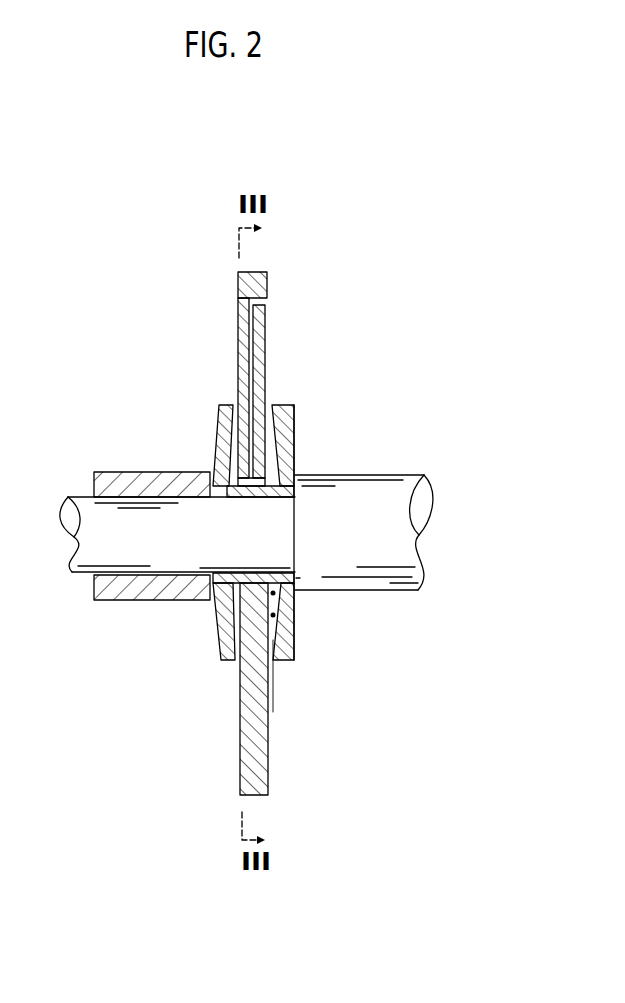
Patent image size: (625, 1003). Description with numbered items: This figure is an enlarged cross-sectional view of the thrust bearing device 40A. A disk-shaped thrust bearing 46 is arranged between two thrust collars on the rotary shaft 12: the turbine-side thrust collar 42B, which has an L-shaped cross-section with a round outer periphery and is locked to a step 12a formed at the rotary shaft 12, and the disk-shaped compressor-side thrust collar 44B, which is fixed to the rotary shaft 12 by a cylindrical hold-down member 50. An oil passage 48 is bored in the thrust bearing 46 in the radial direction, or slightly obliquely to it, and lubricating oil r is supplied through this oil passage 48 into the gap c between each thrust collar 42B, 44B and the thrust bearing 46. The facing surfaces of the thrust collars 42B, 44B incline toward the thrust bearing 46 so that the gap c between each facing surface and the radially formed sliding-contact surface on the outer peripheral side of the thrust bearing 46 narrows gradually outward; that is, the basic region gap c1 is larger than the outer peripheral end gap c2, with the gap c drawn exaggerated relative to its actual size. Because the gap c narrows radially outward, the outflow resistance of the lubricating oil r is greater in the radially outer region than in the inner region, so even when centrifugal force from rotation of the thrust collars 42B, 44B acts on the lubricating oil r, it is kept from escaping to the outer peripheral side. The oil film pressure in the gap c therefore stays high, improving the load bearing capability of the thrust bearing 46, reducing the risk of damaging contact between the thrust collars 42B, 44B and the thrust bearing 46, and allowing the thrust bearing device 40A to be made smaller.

The rotary shaft 12 is at (373, 475).
The step 12a is at (298, 582).
The thrust bearing device 40A is at (218, 509).
The turbine-side thrust collar 42B is at (297, 430).
The compressor-side thrust collar 44B is at (216, 438).
The thrust bearing 46 is at (256, 272).
The oil passage 48 is at (252, 342).
The cylindrical hold-down member 50 is at (115, 472).
The lubricating oil r is at (269, 303).
The gap c is at (273, 615).
The basic region gap c1 is at (273, 593).
The outer peripheral end gap c2 is at (255, 695).